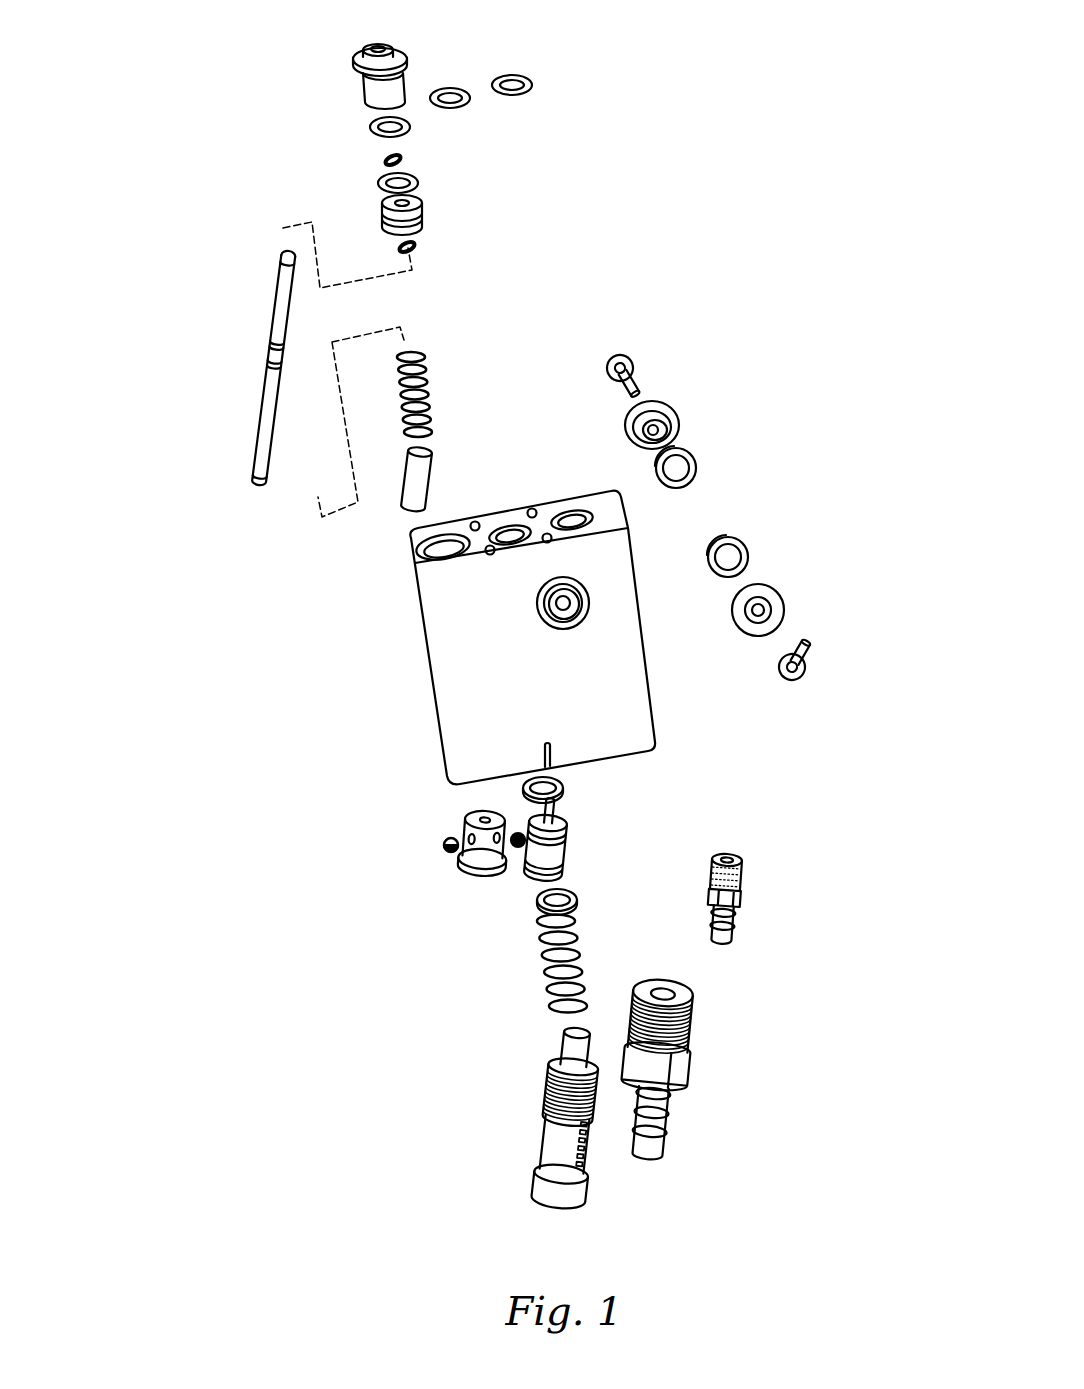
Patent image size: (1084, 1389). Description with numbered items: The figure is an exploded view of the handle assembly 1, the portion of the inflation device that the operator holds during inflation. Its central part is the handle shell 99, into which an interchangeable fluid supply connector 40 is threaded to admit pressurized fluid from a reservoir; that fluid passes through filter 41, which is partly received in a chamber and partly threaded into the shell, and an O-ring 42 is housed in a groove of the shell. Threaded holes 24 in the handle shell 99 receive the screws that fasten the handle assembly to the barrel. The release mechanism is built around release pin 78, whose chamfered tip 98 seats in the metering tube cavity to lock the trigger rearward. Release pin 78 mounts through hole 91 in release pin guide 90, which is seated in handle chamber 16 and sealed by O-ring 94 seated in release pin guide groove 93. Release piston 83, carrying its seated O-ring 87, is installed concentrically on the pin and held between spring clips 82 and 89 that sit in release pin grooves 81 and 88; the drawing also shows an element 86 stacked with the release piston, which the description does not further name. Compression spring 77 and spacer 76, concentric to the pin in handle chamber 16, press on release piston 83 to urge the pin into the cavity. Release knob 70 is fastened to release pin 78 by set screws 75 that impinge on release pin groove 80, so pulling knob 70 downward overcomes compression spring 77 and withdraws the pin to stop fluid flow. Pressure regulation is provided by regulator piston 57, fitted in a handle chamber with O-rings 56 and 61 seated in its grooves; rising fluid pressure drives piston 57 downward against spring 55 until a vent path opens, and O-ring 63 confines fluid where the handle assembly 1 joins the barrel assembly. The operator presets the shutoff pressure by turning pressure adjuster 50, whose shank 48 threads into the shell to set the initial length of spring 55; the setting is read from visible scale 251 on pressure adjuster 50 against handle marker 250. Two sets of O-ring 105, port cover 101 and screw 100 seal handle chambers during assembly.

The handle assembly 1 is at (757, 198).
The handle chamber 16 is at (440, 550).
The threaded holes 24 is at (532, 509).
The fluid supply connector 40 is at (695, 1012).
The filter 41 is at (747, 874).
The O-ring 42 is at (533, 80).
The shank 48 is at (557, 1090).
The pressure adjuster 50 is at (567, 1187).
The spring 55 is at (583, 960).
The O-ring 56 is at (578, 897).
The regulator piston 57 is at (616, 837).
The O-ring 61 is at (565, 788).
The O-ring 63 is at (456, 90).
The release knob 70 is at (470, 873).
The set screws 75 is at (518, 848).
The spacer 76 is at (432, 463).
The compression spring 77 is at (417, 357).
The release pin 78 is at (247, 420).
The release pin groove 80 is at (312, 474).
The release pin groove 81 is at (296, 362).
The spring clip 82 is at (416, 250).
The release piston 83 is at (365, 202).
The spool 86 is at (426, 212).
The O-ring 87 is at (420, 182).
The release pin groove 88 is at (293, 345).
The spring clip 89 is at (405, 157).
The release pin guide 90 is at (335, 80).
The hole 91 is at (378, 47).
The release pin guide groove 93 is at (404, 63).
The O-ring 94 is at (370, 127).
The chamfered tip 98 is at (284, 245).
The handle shell 99 is at (440, 660).
The screw 100 is at (622, 354).
The port cover 101 is at (667, 400).
The O-ring 105 is at (690, 456).
The handle marker 250 is at (545, 750).
The visible scale 251 is at (613, 1150).